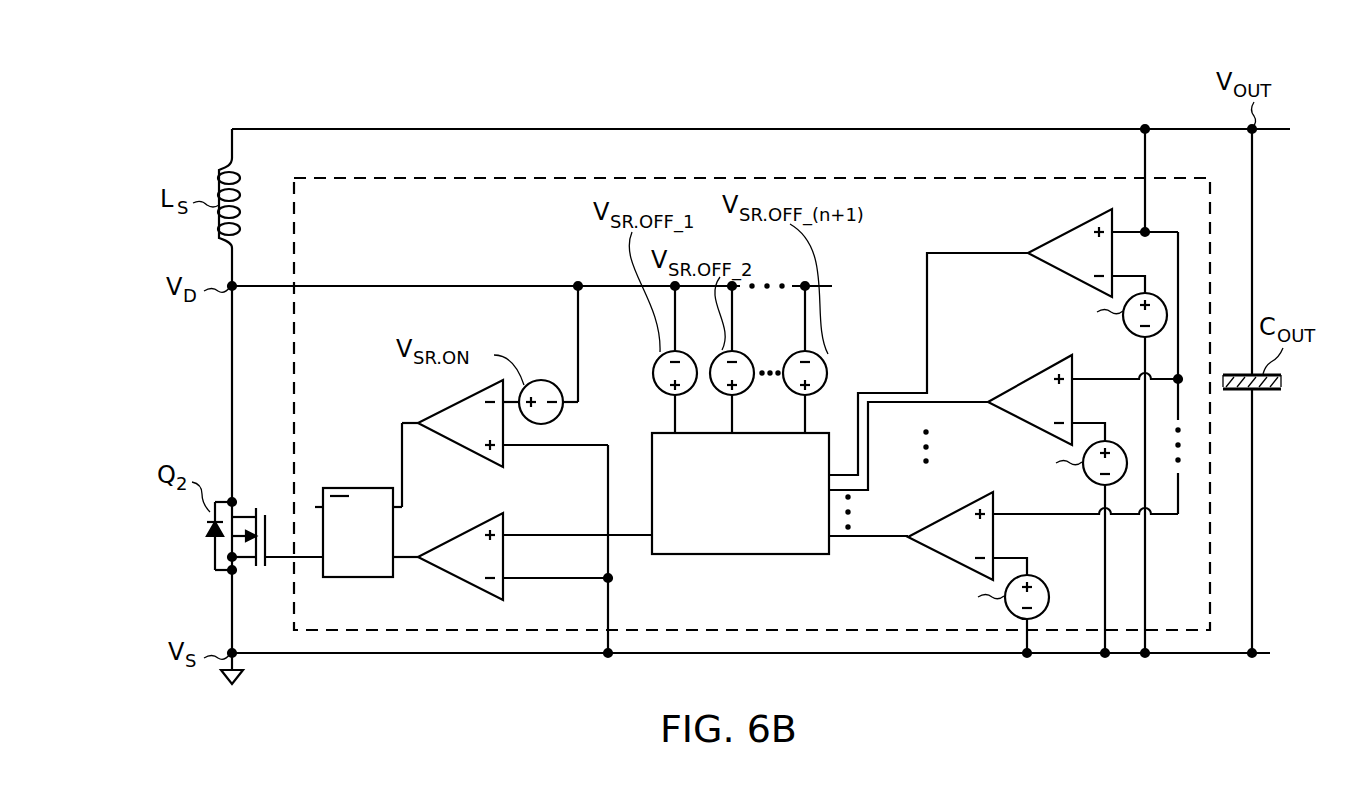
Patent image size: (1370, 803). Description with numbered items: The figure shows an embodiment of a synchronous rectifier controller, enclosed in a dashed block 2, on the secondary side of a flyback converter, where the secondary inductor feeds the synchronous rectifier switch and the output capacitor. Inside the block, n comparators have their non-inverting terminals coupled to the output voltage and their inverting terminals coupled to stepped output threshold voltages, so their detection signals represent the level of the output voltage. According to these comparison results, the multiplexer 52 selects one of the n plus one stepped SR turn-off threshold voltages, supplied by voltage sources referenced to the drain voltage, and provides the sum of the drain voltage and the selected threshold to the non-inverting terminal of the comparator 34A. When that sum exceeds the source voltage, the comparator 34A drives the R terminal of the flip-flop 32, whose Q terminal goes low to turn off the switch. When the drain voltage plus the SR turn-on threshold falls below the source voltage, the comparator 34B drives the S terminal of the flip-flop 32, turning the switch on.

The synchronous rectifier control circuit 2 is at (296, 176).
The flip-flop 32 is at (360, 488).
The comparator 34A is at (462, 586).
The comparator 34B is at (462, 396).
The multiplexer 52 is at (738, 557).